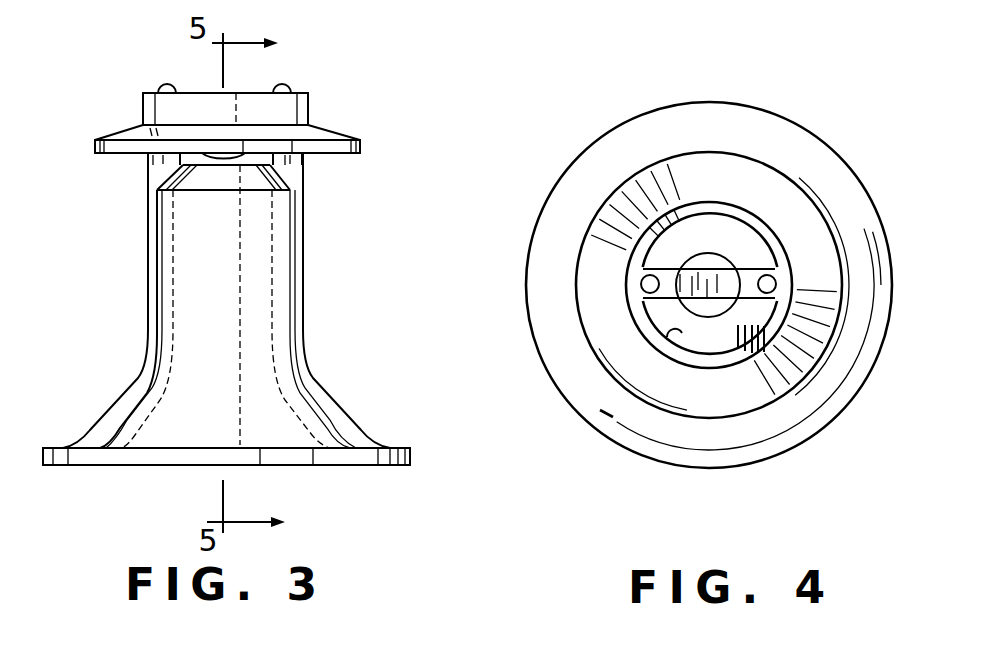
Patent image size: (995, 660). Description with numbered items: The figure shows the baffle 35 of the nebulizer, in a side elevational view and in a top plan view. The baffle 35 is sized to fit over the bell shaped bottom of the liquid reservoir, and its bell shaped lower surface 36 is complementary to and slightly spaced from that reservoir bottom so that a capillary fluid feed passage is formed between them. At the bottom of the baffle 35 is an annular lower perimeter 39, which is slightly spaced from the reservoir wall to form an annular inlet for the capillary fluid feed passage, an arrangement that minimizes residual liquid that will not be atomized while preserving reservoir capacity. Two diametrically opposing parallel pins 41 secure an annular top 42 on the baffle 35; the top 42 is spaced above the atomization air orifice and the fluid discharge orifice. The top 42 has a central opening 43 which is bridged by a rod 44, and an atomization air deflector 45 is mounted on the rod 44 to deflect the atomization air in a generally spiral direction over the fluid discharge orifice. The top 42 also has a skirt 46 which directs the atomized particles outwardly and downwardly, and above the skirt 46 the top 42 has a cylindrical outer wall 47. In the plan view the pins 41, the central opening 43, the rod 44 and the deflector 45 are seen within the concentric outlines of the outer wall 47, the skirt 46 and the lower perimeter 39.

In FIG. 3, the baffle 35 is at (335, 108).
In FIG. 4, the baffle 35 is at (518, 295).
In FIG. 3, the bell shaped lower surface 36 is at (145, 443).
In FIG. 3, the annular lower perimeter 39 is at (412, 455).
In FIG. 4, the annular lower perimeter 39 is at (652, 458).
In FIG. 3, the pins 41 is at (148, 175).
In FIG. 4, the pins 41 is at (641, 283).
In FIG. 3, the annular top 42 is at (250, 102).
In FIG. 4, the annular top 42 is at (622, 188).
In FIG. 4, the central opening 43 is at (676, 338).
In FIG. 4, the rod 44 is at (748, 308).
In FIG. 3, the atomization air deflector 45 is at (240, 163).
In FIG. 4, the atomization air deflector 45 is at (703, 255).
In FIG. 3, the skirt 46 is at (360, 143).
In FIG. 4, the skirt 46 is at (620, 383).
In FIG. 3, the cylindrical outer wall 47 is at (143, 115).
In FIG. 4, the cylindrical outer wall 47 is at (753, 213).